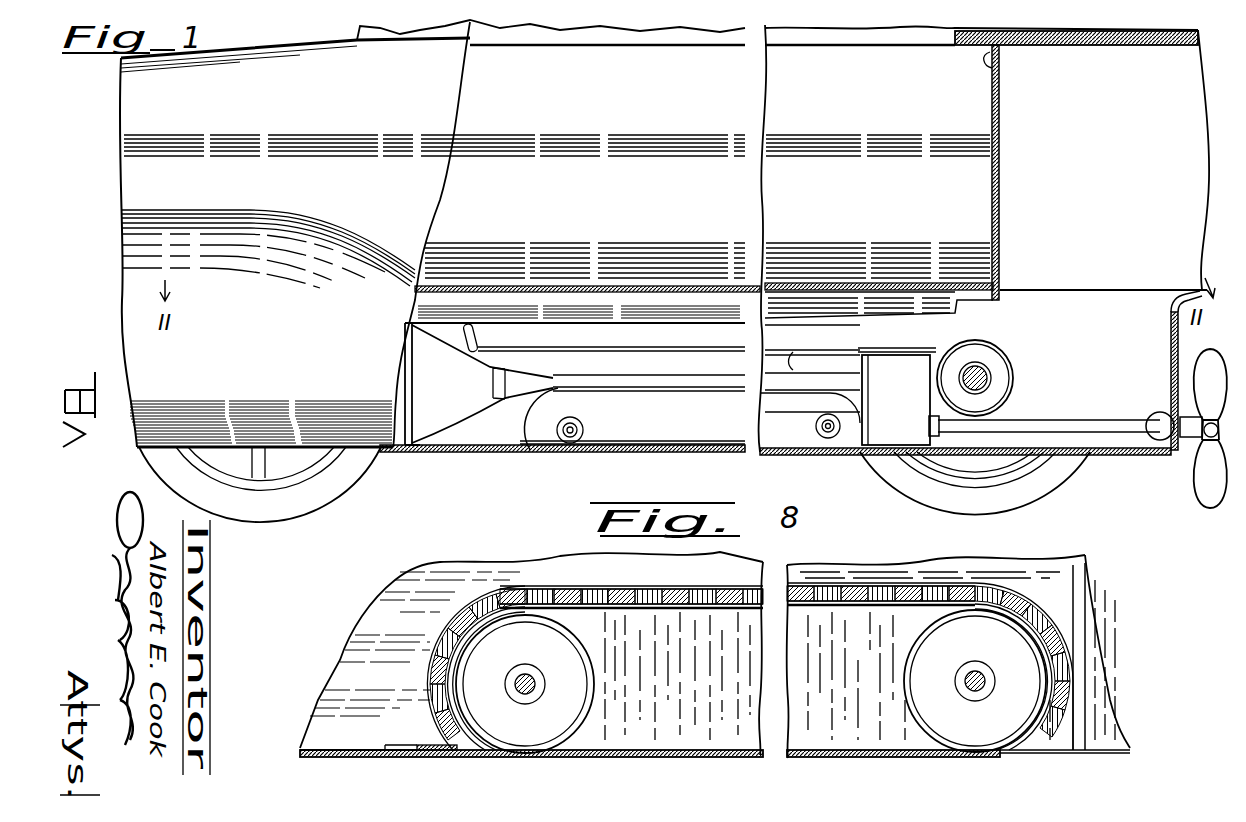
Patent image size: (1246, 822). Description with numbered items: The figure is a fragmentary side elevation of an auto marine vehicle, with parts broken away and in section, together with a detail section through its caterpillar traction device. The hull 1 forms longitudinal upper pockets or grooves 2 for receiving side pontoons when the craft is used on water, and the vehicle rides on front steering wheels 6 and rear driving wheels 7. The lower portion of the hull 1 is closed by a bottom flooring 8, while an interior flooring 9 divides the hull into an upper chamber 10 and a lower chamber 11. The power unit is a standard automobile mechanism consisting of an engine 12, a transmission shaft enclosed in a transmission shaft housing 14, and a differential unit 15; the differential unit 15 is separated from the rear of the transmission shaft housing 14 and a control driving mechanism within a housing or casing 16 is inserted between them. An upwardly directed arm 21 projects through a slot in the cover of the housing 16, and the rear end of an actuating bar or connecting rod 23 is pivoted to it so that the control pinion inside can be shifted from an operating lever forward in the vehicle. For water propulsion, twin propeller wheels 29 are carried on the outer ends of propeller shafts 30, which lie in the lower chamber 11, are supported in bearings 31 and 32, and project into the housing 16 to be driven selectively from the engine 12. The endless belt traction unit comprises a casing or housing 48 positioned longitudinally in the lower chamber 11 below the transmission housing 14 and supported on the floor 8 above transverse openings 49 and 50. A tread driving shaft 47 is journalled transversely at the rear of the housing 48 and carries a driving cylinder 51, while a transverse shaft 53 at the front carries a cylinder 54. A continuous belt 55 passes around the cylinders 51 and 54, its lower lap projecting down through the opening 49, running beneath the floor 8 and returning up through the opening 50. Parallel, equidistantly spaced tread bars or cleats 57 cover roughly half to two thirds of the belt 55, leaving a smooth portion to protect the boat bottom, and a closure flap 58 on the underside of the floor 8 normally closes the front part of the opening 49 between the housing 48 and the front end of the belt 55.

In FIG. 1, the hull 1 is at (432, 233).
In FIG. 1, the upper pockets or grooves 2 is at (268, 240).
In FIG. 1, the front steering wheels 6 is at (318, 498).
In FIG. 1, the rear driving wheels 7 is at (1052, 482).
In FIG. 1, the bottom or flooring 8 is at (478, 452).
In FIG. 8, the bottom or flooring 8 is at (346, 752).
In FIG. 1, the flooring 9 is at (575, 298).
In FIG. 1, the upper chamber 10 is at (996, 60).
In FIG. 1, the lower chamber 11 is at (458, 446).
In FIG. 8, the lower chamber 11 is at (378, 746).
In FIG. 1, the engine 12 is at (395, 432).
In FIG. 1, the transmission shaft housing 14 is at (614, 382).
In FIG. 1, the differential unit 15 is at (1010, 387).
In FIG. 1, the housing or casing 16 is at (896, 400).
In FIG. 8, the housing or casing 16 is at (1100, 680).
In FIG. 1, the arm 21 is at (884, 358).
In FIG. 1, the actuating bar or connecting rod 23 is at (812, 381).
In FIG. 1, the propeller wheels 29 is at (1212, 470).
In FIG. 1, the propeller shafts 30 is at (1098, 425).
In FIG. 1, the bearing 31 is at (1163, 440).
In FIG. 1, the bearing 32 is at (928, 430).
In FIG. 1, the endless belt traction driving shaft 47 is at (815, 426).
In FIG. 8, the endless belt traction driving shaft 47 is at (975, 681).
In FIG. 1, the casing or housing 48 is at (632, 424).
In FIG. 8, the casing or housing 48 is at (1040, 614).
In FIG. 8, the transverse opening 49 is at (586, 755).
In FIG. 8, the transverse opening 50 is at (1046, 755).
In FIG. 8, the driving cylinder 51 is at (912, 722).
In FIG. 1, the transverse shaft 53 is at (583, 428).
In FIG. 8, the transverse shaft 53 is at (530, 680).
In FIG. 8, the cylinder 54 is at (598, 696).
In FIG. 1, the continuous belt 55 is at (682, 455).
In FIG. 8, the continuous belt 55 is at (872, 606).
In FIG. 8, the tread bars or cleats 57 is at (635, 600).
In FIG. 8, the closure flap 58 is at (472, 758).